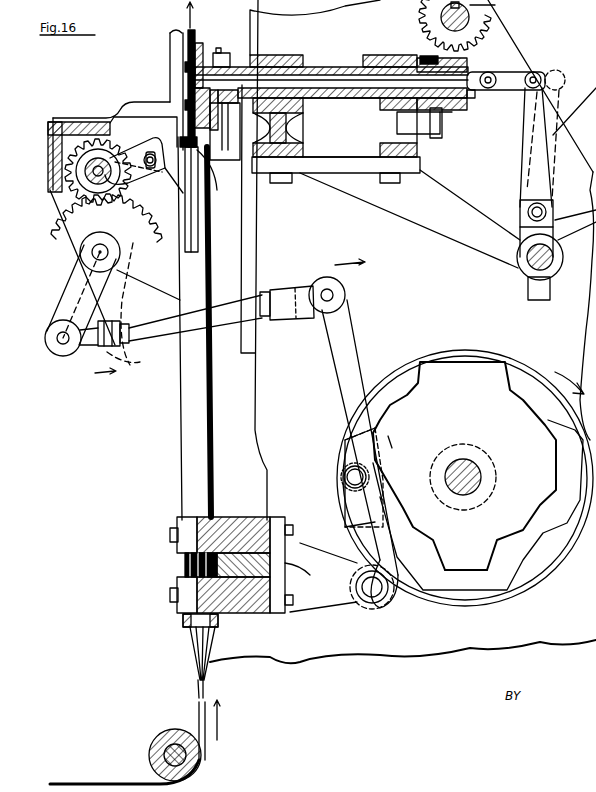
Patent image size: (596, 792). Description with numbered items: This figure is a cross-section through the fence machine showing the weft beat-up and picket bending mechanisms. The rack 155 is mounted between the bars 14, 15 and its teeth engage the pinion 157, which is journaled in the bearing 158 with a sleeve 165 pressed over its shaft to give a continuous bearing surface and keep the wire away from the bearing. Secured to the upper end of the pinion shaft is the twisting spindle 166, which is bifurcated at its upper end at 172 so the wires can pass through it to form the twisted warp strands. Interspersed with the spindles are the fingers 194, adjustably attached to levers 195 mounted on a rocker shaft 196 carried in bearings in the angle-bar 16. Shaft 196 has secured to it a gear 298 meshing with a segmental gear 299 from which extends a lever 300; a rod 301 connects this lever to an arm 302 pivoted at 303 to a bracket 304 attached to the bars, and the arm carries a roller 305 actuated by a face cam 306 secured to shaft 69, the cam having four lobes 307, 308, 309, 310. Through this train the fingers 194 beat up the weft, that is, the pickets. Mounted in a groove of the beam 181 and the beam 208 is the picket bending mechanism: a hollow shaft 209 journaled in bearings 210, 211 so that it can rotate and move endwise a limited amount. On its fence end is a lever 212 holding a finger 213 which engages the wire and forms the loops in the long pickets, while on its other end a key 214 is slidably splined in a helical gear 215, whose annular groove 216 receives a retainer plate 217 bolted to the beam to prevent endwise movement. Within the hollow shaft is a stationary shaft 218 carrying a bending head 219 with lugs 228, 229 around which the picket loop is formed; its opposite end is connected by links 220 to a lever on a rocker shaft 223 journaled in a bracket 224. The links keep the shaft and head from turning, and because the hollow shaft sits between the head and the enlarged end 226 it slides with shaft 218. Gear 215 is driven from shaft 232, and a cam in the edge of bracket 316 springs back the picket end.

The bar 14 is at (245, 517).
The bar 15 is at (233, 608).
The angle-bar 16 is at (50, 128).
The shaft 69 is at (462, 462).
The rack 155 is at (230, 556).
The pinion 157 is at (185, 572).
The bearing 158 is at (178, 522).
The sleeve 165 is at (186, 630).
The twisting spindle 166 is at (179, 420).
The bifurcated upper end 172 is at (197, 233).
The beam 181 is at (307, 148).
The finger 194 is at (178, 154).
The lever 195 is at (148, 152).
The rocker shaft 196 is at (92, 162).
The beam 208 is at (423, 153).
The hollow shaft 209 is at (323, 67).
The bearing 210 is at (284, 54).
The bearing 211 is at (395, 55).
The lever 212 is at (222, 145).
The finger 213 is at (203, 183).
The key 214 is at (470, 63).
The helical gear 215 is at (463, 108).
The annular groove 216 is at (430, 53).
The retainer plate 217 is at (440, 113).
The stationary shaft 218 is at (343, 88).
The bending head 219 is at (199, 47).
The link 220 is at (524, 68).
The rocker shaft 223 is at (530, 257).
The bracket 224 is at (453, 237).
The enlarged end 226 is at (473, 92).
The lug 228 is at (185, 67).
The lug 229 is at (184, 105).
The shaft 232 is at (507, 8).
The gear 298 is at (92, 166).
The segmental gear 299 is at (86, 236).
The lever 300 is at (75, 280).
The rod 301 is at (152, 345).
The arm 302 is at (352, 342).
The pivot 303 is at (366, 600).
The bracket 304 is at (323, 605).
The roller 305 is at (348, 469).
The face cam 306 is at (503, 390).
The lobe 307 is at (390, 445).
The lobe 308 is at (466, 398).
The lobe 309 is at (542, 470).
The lobe 310 is at (472, 560).
The bracket 316 is at (172, 45).